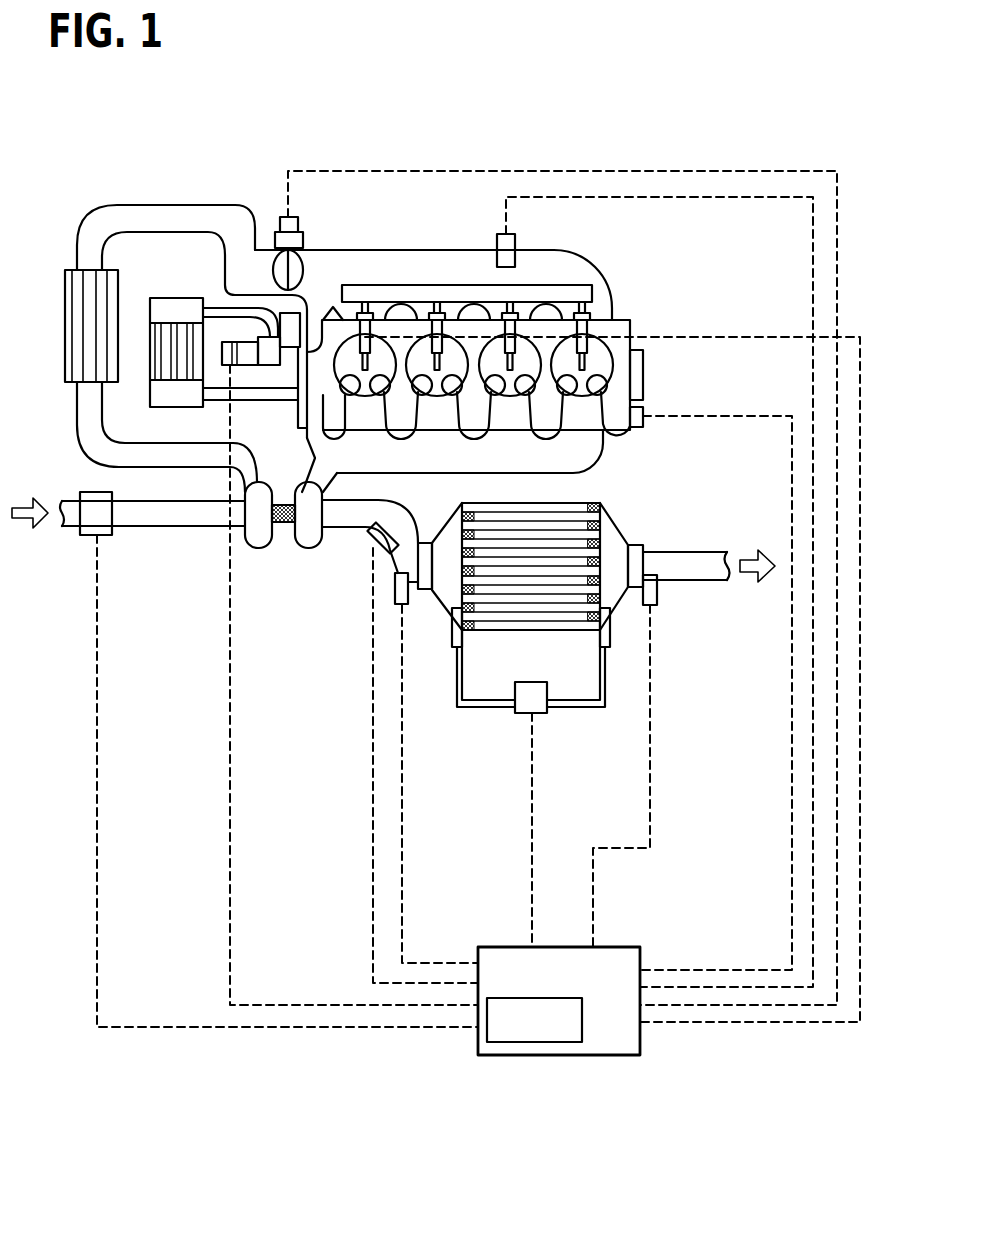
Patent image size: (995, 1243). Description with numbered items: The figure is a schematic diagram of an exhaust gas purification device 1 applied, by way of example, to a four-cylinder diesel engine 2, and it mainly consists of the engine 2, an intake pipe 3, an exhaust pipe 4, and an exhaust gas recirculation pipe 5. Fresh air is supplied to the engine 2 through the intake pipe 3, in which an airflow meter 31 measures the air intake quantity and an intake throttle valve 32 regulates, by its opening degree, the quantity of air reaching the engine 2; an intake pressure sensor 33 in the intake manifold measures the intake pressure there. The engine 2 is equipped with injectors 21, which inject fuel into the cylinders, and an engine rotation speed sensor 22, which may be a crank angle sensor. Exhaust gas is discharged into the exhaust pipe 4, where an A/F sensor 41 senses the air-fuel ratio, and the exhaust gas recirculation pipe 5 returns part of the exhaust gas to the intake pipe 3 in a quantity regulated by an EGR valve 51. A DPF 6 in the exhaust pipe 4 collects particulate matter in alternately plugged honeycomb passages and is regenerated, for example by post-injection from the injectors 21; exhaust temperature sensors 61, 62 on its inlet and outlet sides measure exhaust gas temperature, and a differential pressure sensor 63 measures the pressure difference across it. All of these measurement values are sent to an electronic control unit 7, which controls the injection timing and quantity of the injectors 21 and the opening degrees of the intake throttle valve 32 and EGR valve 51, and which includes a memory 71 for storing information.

The exhaust gas purification device 1 is at (692, 113).
The engine 2 is at (637, 323).
The injector 21 is at (600, 340).
The engine rotation speed sensor 22 is at (644, 427).
The intake pipe 3 is at (180, 527).
The airflow meter 31 is at (88, 537).
The intake throttle valve 32 is at (304, 262).
The intake pressure sensor 33 is at (497, 237).
The exhaust pipe 4 is at (336, 535).
The A/F sensor 41 is at (372, 545).
The exhaust gas recirculation pipe 5 is at (255, 402).
The EGR valve 51 is at (233, 342).
The DPF 6 is at (565, 503).
The exhaust temperature sensor 61 is at (406, 605).
The exhaust temperature sensor 62 is at (657, 600).
The differential pressure sensor 63 is at (522, 714).
The electronic control unit 7 is at (642, 1028).
The memory 71 is at (583, 1020).